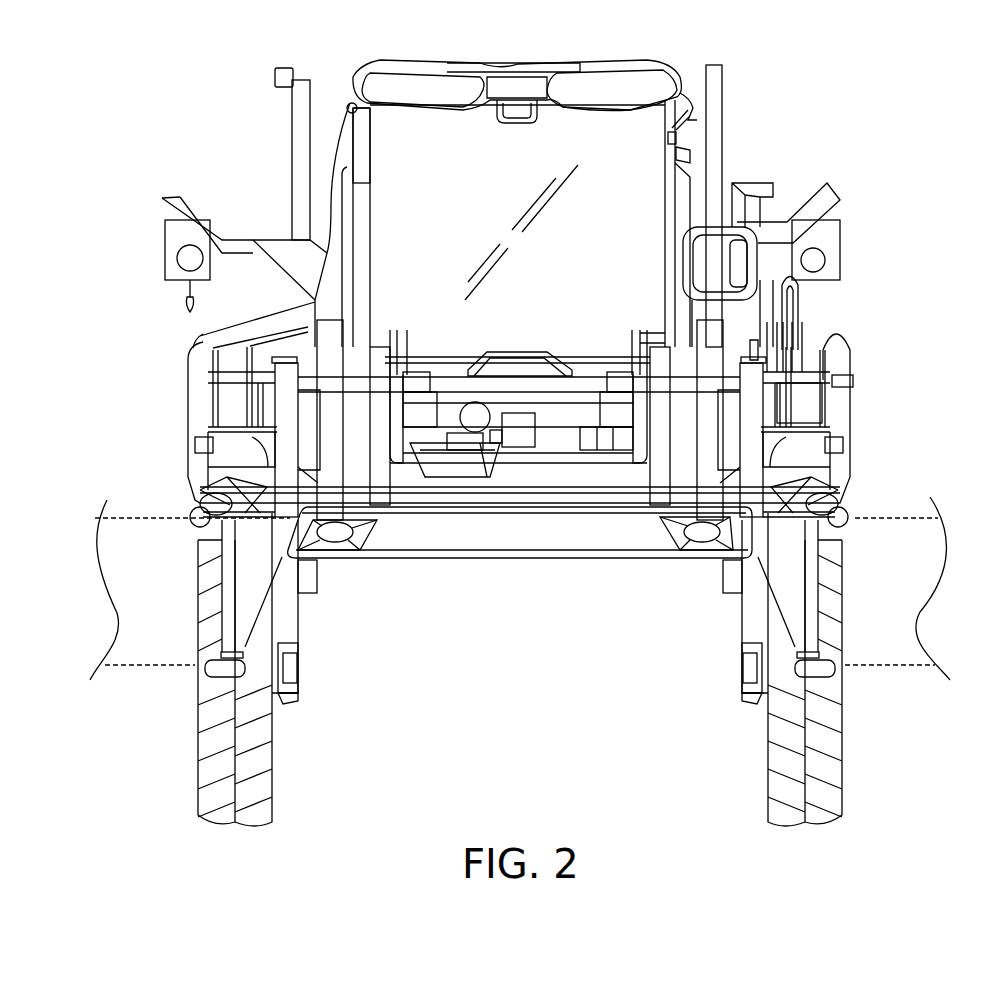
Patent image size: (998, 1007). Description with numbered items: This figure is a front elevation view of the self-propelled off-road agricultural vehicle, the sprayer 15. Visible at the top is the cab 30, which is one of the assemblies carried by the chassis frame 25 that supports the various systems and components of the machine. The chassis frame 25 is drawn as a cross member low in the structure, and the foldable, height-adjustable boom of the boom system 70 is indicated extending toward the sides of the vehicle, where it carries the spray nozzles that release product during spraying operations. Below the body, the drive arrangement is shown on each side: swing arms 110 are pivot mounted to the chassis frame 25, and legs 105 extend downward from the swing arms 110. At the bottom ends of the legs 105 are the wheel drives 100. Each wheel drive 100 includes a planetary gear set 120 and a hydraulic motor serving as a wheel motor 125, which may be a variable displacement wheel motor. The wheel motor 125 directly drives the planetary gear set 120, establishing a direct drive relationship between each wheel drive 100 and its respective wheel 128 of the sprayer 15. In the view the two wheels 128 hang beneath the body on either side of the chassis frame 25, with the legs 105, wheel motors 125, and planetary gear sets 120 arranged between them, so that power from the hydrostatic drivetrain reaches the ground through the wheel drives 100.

The sprayer 15 is at (842, 97).
The cab 30 is at (650, 60).
The boom system 70 is at (888, 497).
The chassis frame 25 is at (617, 558).
The wheel drive 100 is at (298, 703).
The leg 105 is at (302, 629).
The swing arm 110 is at (323, 581).
The planetary gear set 120 is at (280, 698).
The wheel motor 125 is at (290, 665).
The wheel 128 is at (238, 826).